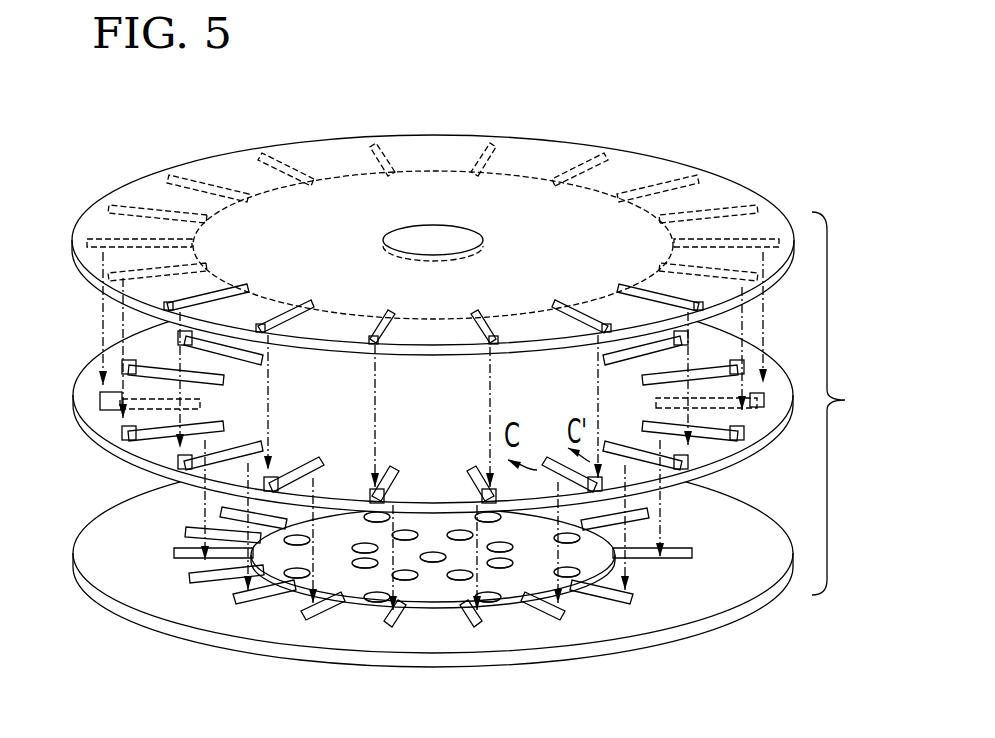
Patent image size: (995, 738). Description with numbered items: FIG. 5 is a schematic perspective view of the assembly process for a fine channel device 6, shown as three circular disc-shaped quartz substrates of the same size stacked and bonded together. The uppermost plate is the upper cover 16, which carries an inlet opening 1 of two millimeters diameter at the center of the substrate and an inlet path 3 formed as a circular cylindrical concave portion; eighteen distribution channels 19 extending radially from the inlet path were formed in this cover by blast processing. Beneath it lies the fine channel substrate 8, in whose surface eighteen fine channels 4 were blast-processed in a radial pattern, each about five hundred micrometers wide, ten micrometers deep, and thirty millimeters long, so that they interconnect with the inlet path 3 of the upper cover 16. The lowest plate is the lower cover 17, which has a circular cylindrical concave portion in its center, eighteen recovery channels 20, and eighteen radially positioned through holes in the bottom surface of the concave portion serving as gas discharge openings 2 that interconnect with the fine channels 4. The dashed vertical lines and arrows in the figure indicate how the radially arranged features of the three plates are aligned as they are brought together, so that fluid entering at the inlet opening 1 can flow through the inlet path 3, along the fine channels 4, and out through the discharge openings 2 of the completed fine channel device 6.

The inlet opening 1 is at (430, 232).
The discharge opening 2 is at (458, 580).
The inlet path 3 is at (513, 206).
The fine channel 4 is at (100, 399).
The fine channel device 6 is at (856, 403).
The fine channel substrate 8 is at (88, 368).
The upper cover 16 is at (97, 203).
The lower cover 17 is at (98, 510).
The distribution channel 19 is at (722, 208).
The recovery channel 20 is at (608, 598).